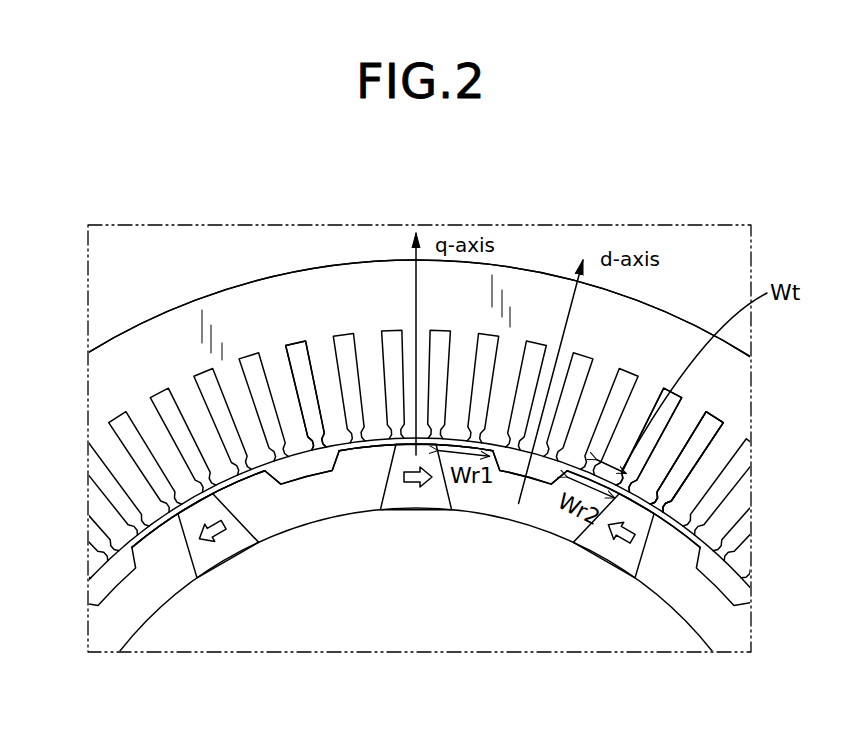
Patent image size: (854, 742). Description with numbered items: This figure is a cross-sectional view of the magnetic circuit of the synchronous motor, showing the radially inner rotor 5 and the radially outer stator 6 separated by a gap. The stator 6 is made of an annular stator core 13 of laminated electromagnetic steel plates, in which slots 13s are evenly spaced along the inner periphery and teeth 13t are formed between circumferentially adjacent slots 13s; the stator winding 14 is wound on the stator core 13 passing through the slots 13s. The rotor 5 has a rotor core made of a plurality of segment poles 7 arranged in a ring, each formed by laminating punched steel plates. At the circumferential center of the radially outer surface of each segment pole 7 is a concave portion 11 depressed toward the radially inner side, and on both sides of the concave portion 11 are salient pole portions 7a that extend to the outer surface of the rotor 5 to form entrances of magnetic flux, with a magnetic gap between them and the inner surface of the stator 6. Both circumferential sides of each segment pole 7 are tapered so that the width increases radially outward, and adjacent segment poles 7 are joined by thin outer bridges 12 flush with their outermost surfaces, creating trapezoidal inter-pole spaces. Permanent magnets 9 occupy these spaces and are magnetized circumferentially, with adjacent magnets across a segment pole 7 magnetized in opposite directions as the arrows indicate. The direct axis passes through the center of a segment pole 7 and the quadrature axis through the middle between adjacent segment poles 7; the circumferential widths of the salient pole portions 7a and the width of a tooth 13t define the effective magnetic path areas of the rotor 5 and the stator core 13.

The rotor 5 is at (757, 580).
The stator 6 is at (251, 170).
The segment pole 7 is at (333, 508).
The salient pole portion 7a is at (240, 488).
The permanent magnet 9 is at (420, 498).
The concave portion 11 is at (305, 470).
The outer bridge 12 is at (176, 496).
The stator core 13 is at (250, 305).
The tooth 13t is at (663, 467).
The slot 13s is at (697, 460).
The stator winding 14 is at (297, 353).